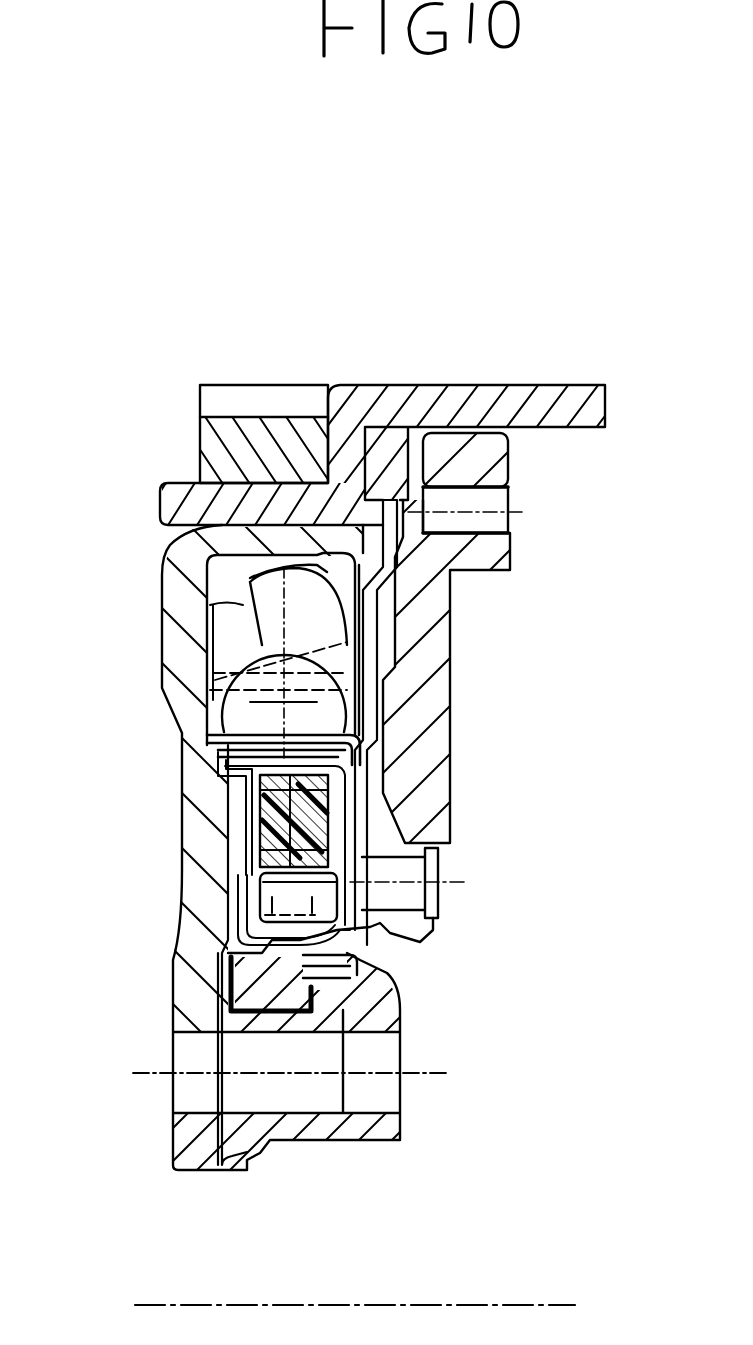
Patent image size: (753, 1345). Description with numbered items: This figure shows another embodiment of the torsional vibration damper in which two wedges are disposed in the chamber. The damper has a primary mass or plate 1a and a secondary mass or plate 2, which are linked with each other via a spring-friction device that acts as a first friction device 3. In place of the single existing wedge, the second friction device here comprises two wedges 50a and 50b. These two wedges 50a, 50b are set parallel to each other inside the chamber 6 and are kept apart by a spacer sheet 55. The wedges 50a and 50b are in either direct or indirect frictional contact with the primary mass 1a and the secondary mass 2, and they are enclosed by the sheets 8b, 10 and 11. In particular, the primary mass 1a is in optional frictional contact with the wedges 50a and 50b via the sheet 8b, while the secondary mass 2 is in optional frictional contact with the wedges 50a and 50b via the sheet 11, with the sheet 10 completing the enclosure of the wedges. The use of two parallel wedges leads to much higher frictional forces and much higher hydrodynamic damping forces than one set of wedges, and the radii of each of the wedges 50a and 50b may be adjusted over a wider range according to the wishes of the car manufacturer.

The primary mass 1a is at (165, 662).
The secondary mass 2 is at (450, 703).
The first friction device 3 is at (253, 678).
The chamber 6 is at (223, 780).
The sheet 8b is at (218, 955).
The sheet 10 is at (260, 882).
The sheet 11 is at (365, 797).
The wedge 50a is at (440, 843).
The wedge 50b is at (262, 818).
The spacer sheet 55 is at (262, 827).